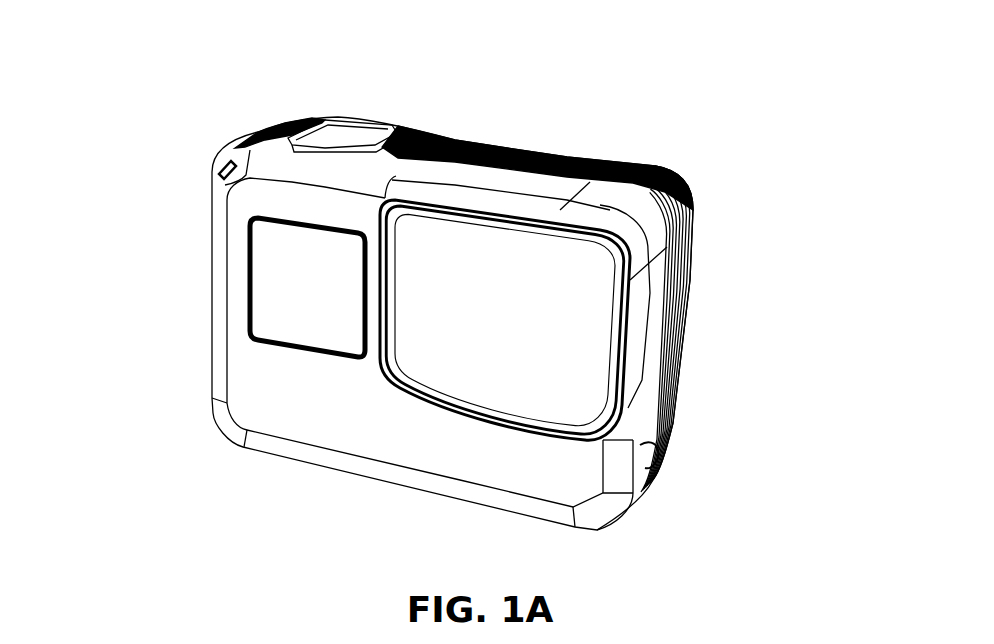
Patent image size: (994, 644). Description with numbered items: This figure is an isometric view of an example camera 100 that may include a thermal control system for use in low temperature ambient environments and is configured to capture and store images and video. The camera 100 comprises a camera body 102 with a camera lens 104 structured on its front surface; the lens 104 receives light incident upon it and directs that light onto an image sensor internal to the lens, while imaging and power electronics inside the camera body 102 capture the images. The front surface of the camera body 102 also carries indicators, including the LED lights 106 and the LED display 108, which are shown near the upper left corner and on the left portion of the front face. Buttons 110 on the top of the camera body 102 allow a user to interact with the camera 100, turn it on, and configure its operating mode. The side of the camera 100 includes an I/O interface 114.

The camera 100 is at (456, 270).
The camera body 102 is at (603, 153).
The camera lens 104 is at (565, 338).
The LED lights 106 is at (217, 165).
The LED display 108 is at (263, 308).
The buttons 110 is at (338, 118).
The I/O interface 114 is at (670, 443).